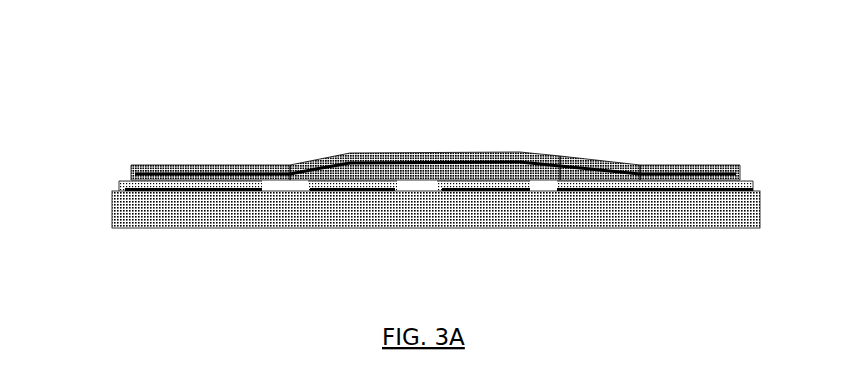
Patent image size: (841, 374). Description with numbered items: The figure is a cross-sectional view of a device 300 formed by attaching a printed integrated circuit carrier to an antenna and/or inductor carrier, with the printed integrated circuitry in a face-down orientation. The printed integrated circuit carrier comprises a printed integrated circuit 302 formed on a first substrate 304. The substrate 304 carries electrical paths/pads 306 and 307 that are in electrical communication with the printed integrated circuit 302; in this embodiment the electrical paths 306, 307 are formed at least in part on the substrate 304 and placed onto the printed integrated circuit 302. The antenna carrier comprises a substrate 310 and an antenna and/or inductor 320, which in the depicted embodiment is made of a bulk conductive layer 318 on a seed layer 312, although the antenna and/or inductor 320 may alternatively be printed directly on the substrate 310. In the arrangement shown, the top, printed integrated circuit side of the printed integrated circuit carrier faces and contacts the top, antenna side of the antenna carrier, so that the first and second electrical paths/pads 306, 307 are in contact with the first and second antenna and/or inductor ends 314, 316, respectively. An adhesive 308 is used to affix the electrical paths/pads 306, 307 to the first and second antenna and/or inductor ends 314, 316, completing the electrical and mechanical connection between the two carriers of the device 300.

The device 300 is at (220, 47).
The printed integrated circuit 302 is at (432, 153).
The first substrate 304 is at (552, 155).
The first electrical path/pad 306 is at (634, 165).
The second electrical path/pad 307 is at (160, 168).
The adhesive 308 is at (232, 172).
The substrate 310 is at (213, 213).
The seed layer 312 is at (488, 195).
The first antenna and/or inductor end 314 is at (663, 190).
The second antenna and/or inductor end 316 is at (118, 182).
The bulk conductive layer 318 is at (437, 190).
The antenna and/or inductor 320 is at (777, 180).